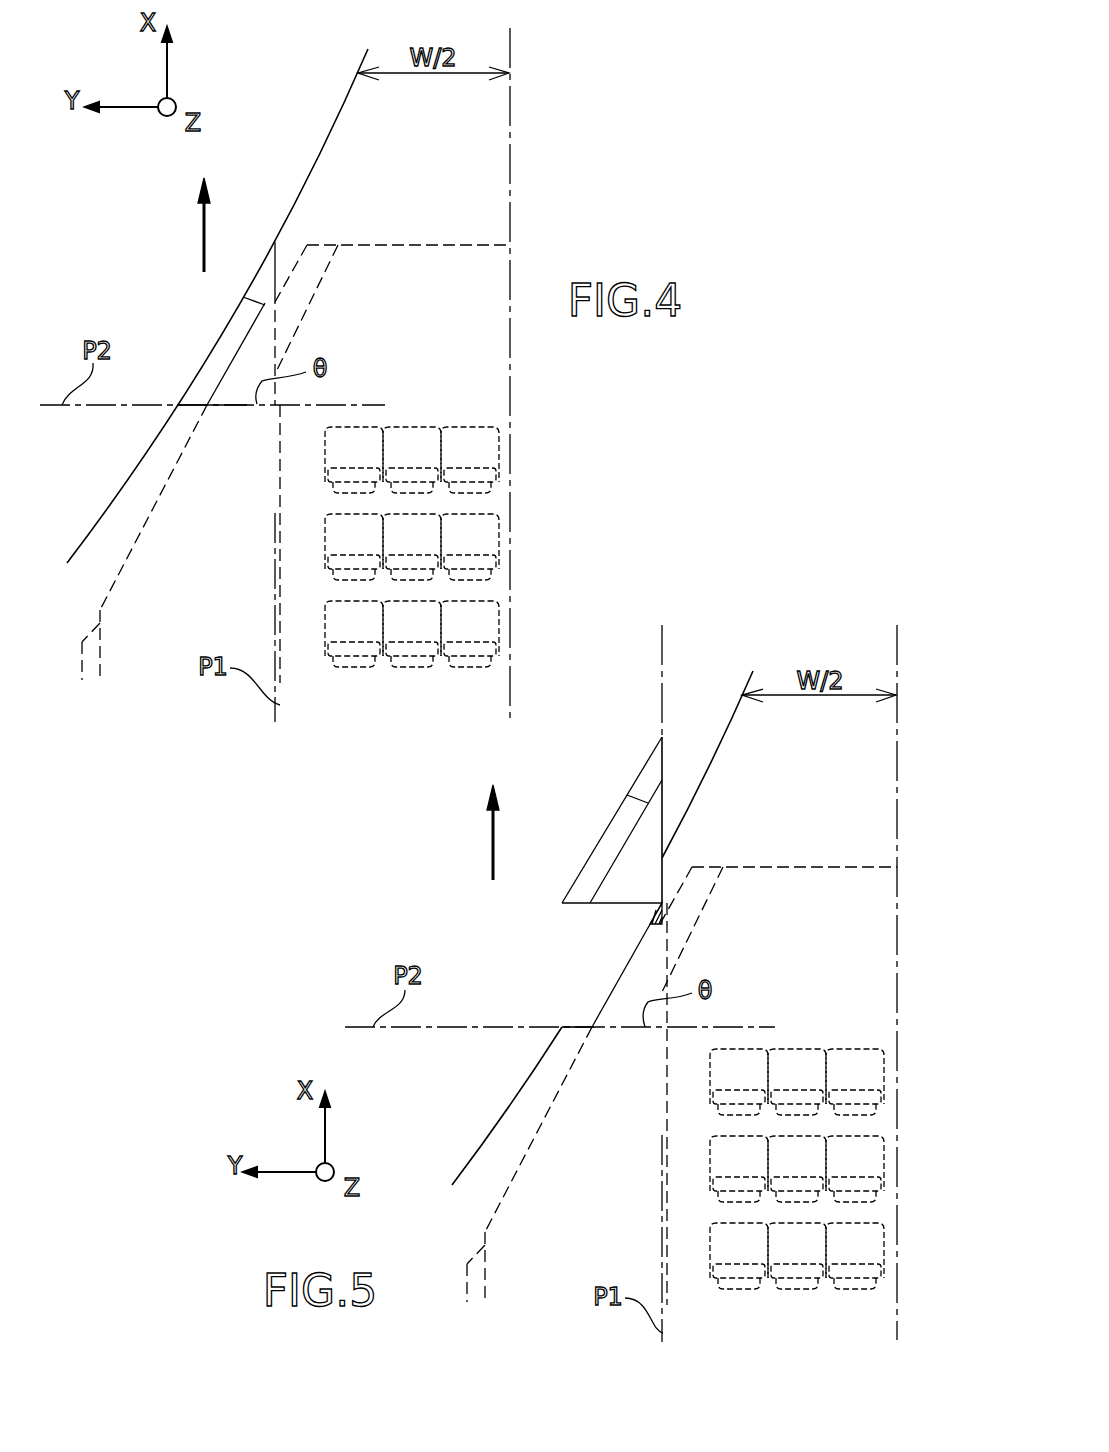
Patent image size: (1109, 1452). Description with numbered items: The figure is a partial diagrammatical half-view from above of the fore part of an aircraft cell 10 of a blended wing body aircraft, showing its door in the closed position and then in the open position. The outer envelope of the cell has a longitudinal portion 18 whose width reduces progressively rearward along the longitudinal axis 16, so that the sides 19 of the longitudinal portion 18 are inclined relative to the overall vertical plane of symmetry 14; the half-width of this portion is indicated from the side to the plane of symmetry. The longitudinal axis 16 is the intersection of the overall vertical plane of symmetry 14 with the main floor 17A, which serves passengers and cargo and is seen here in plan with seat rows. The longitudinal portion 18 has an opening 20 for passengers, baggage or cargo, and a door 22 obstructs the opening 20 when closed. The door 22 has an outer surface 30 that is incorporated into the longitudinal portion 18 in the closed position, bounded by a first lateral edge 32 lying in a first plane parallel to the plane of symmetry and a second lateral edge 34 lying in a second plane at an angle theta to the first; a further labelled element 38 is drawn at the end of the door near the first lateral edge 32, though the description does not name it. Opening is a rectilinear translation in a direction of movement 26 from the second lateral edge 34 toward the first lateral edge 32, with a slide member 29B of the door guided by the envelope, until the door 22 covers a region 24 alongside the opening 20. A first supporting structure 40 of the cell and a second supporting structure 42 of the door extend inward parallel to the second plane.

In FIG. 4, the aircraft cell 10 is at (205, 292).
In FIG. 5, the aircraft cell 10 is at (574, 916).
In FIG. 4, the longitudinal portion 18 is at (205, 292).
In FIG. 5, the longitudinal portion 18 is at (574, 916).
In FIG. 4, the overall vertical plane of symmetry 14 is at (566, 374).
In FIG. 5, the overall vertical plane of symmetry 14 is at (878, 959).
In FIG. 4, the longitudinal axis 16 is at (511, 36).
In FIG. 5, the longitudinal axis 16 is at (897, 657).
In FIG. 4, the main floor 17A is at (392, 245).
In FIG. 5, the main floor 17A is at (778, 867).
In FIG. 4, the sides 19 is at (349, 88).
In FIG. 5, the sides 19 is at (736, 712).
In FIG. 5, the opening 20 is at (580, 1012).
In FIG. 4, the door 22 is at (173, 457).
In FIG. 5, the door 22 is at (564, 1017).
In FIG. 4, the region 24 is at (300, 178).
In FIG. 5, the region 24 is at (690, 800).
In FIG. 4, the direction of movement 26 is at (203, 245).
In FIG. 5, the direction of movement 26 is at (493, 845).
In FIG. 5, the slide member 29B is at (650, 923).
In FIG. 4, the outer surface 30 is at (225, 335).
In FIG. 5, the outer surface 30 is at (612, 850).
In FIG. 4, the first lateral edge 32 is at (275, 242).
In FIG. 5, the first lateral edge 32 is at (660, 738).
In FIG. 4, the second lateral edge 34 is at (177, 405).
In FIG. 5, the second lateral edge 34 is at (565, 901).
In FIG. 4, the upper edge of panel 38 is at (243, 298).
In FIG. 5, the upper edge of panel 38 is at (633, 794).
In FIG. 4, the first supporting structure 40 is at (245, 405).
In FIG. 5, the first supporting structure 40 is at (630, 1027).
In FIG. 4, the second supporting structure 42 is at (227, 407).
In FIG. 5, the second supporting structure 42 is at (628, 903).